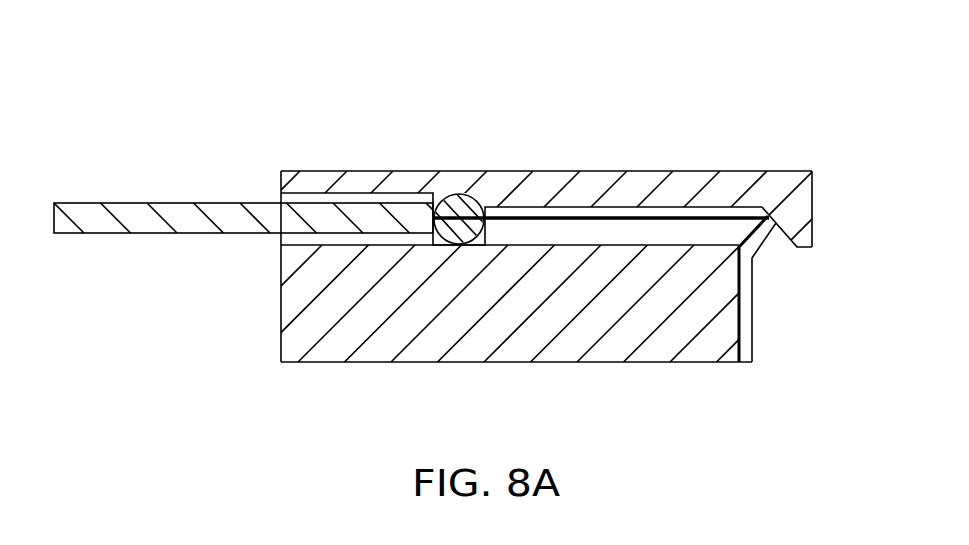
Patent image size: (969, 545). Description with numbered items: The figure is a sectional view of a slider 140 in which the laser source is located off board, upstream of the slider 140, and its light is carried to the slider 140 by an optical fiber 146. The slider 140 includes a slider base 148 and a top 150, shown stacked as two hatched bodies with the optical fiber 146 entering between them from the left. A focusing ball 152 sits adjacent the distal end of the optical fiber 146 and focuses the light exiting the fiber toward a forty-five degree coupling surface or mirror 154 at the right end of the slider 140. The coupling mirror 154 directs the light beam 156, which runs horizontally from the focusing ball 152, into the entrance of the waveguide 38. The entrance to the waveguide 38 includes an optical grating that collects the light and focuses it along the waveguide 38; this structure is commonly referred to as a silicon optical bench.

The slider 140 is at (547, 117).
The optical fiber 146 is at (115, 202).
The slider base 148 is at (375, 345).
The top 150 is at (327, 180).
The focusing ball 152 is at (453, 203).
The coupling mirror 154 is at (783, 233).
The light beam 156 is at (585, 215).
The waveguide 38 is at (753, 328).